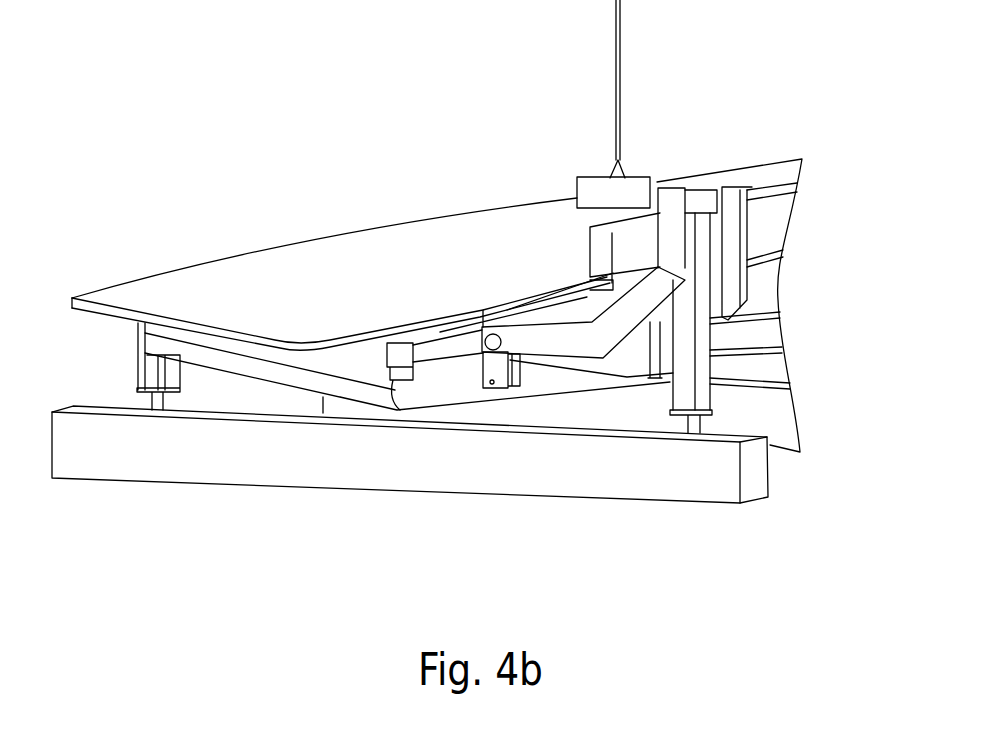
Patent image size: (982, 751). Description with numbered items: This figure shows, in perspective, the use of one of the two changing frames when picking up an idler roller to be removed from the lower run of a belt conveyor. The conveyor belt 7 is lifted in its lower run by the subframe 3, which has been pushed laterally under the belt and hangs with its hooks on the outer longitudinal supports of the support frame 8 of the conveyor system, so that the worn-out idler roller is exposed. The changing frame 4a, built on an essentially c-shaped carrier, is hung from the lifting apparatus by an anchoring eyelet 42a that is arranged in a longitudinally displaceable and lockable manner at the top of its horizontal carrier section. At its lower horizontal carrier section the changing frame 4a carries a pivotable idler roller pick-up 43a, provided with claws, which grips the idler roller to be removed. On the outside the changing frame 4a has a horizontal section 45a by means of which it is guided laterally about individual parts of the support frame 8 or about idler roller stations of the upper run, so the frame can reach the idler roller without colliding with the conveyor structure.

The conveyor belt 7 is at (153, 298).
The anchoring eyelet 42a is at (623, 160).
The horizontal section 45a is at (702, 200).
The support frame 8 is at (765, 225).
The subframe 3 is at (730, 285).
The idler roller pick-up 43a is at (438, 350).
The changing frame 4a is at (553, 345).